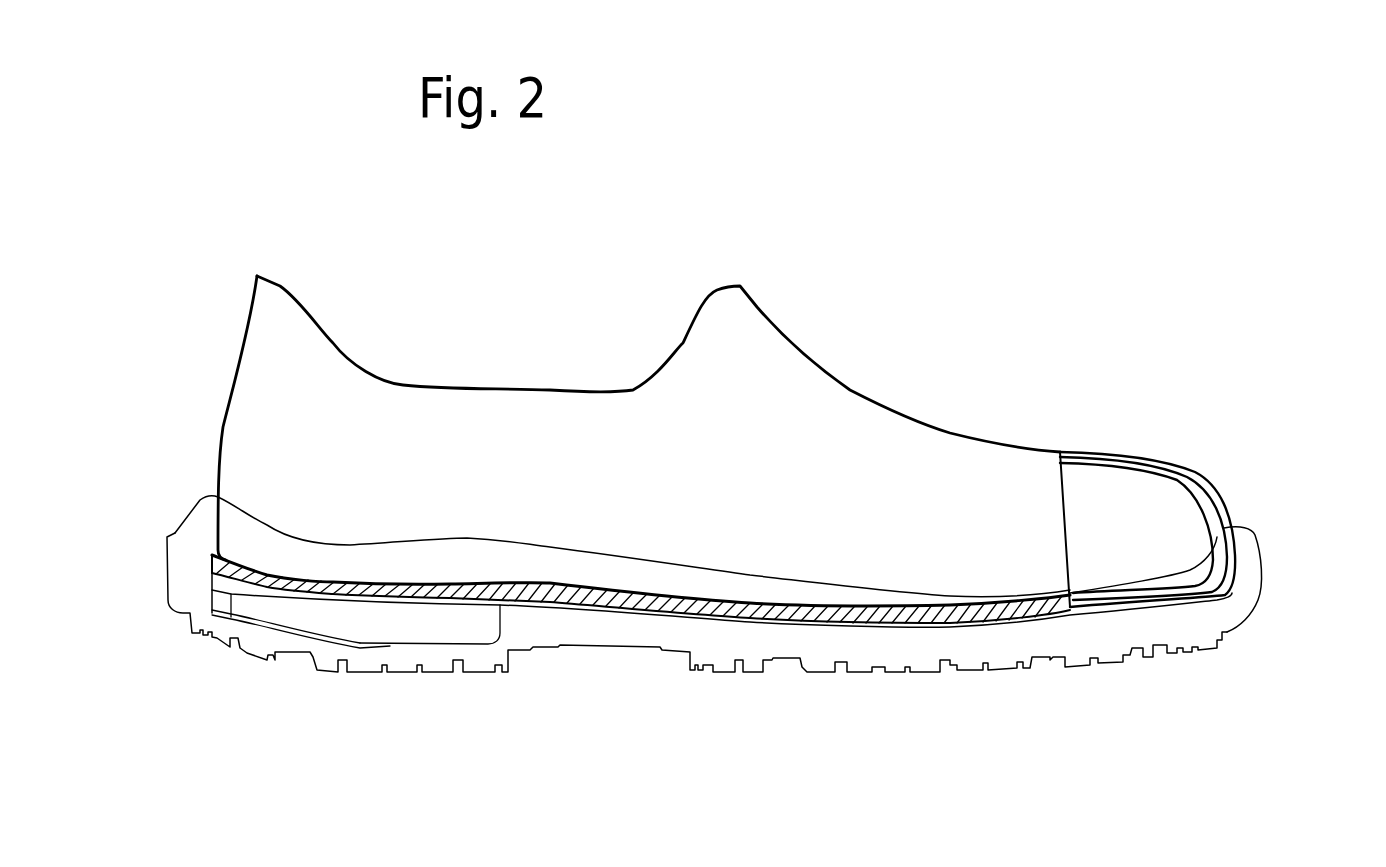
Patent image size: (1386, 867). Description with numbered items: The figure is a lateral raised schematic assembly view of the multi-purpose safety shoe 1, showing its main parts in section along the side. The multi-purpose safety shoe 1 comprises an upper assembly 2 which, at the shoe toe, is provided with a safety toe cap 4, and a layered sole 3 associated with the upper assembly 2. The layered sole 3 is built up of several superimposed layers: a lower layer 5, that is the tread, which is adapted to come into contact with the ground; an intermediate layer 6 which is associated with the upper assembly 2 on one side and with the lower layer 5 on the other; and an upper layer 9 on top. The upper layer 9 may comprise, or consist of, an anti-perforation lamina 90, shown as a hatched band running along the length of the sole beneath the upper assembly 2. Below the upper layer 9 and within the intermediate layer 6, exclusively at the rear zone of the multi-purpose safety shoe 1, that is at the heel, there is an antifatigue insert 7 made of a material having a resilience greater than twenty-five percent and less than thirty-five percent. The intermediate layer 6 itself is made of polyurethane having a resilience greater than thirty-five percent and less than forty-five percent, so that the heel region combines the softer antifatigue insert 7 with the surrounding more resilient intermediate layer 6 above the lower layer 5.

The multi-purpose safety shoe 1 is at (150, 290).
The upper assembly 2 is at (233, 437).
The layered sole 3 is at (135, 588).
The safety toe cap 4 is at (1187, 492).
The lower layer 5 is at (1243, 670).
The intermediate layer 6 is at (1292, 601).
The antifatigue insert 7 is at (333, 620).
The upper layer 9 is at (190, 560).
The anti-perforation lamina 90 is at (750, 610).